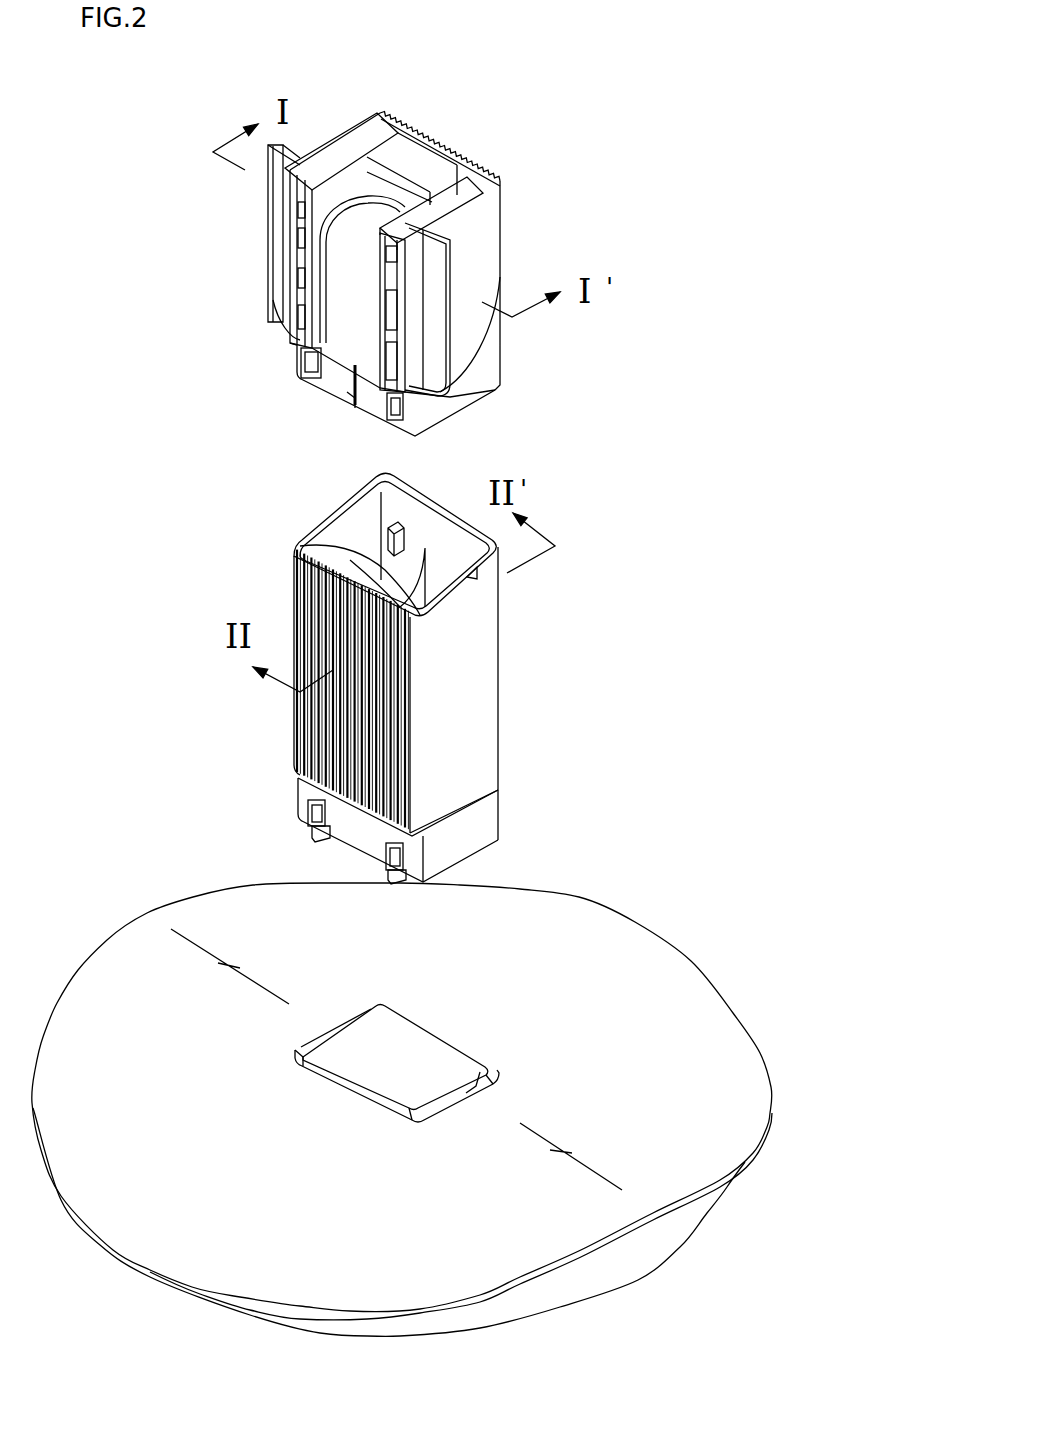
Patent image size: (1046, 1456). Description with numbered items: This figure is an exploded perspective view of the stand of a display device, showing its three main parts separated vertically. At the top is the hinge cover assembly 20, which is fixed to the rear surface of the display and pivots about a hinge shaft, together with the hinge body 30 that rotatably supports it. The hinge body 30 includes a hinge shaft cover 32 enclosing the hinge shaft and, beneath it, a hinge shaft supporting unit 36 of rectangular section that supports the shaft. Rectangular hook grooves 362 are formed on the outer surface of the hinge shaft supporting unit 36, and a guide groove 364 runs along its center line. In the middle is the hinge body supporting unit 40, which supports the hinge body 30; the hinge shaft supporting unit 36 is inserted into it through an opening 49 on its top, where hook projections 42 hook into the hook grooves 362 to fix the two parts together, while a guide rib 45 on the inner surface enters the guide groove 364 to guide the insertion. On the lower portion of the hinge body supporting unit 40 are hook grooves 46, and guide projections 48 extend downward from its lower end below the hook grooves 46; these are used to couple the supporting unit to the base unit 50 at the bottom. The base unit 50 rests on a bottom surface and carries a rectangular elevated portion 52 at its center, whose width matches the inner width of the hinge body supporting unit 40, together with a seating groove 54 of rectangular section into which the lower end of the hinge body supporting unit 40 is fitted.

The hinge cover assembly 20 is at (508, 222).
The hinge body 30 is at (485, 374).
The hinge shaft cover 32 is at (342, 296).
The hinge shaft supporting unit 36 is at (333, 373).
The hook groove 362 is at (422, 412).
The guide groove 364 is at (352, 398).
The hinge body supporting unit 40 is at (515, 682).
The hook projection 42 is at (393, 522).
The guide rib 45 is at (390, 576).
The hook groove 46 is at (313, 812).
The guide projection 48 is at (319, 831).
The opening 49 is at (448, 555).
The base unit 50 is at (674, 955).
The elevated portion 52 is at (428, 1047).
The seating groove 54 is at (462, 1090).